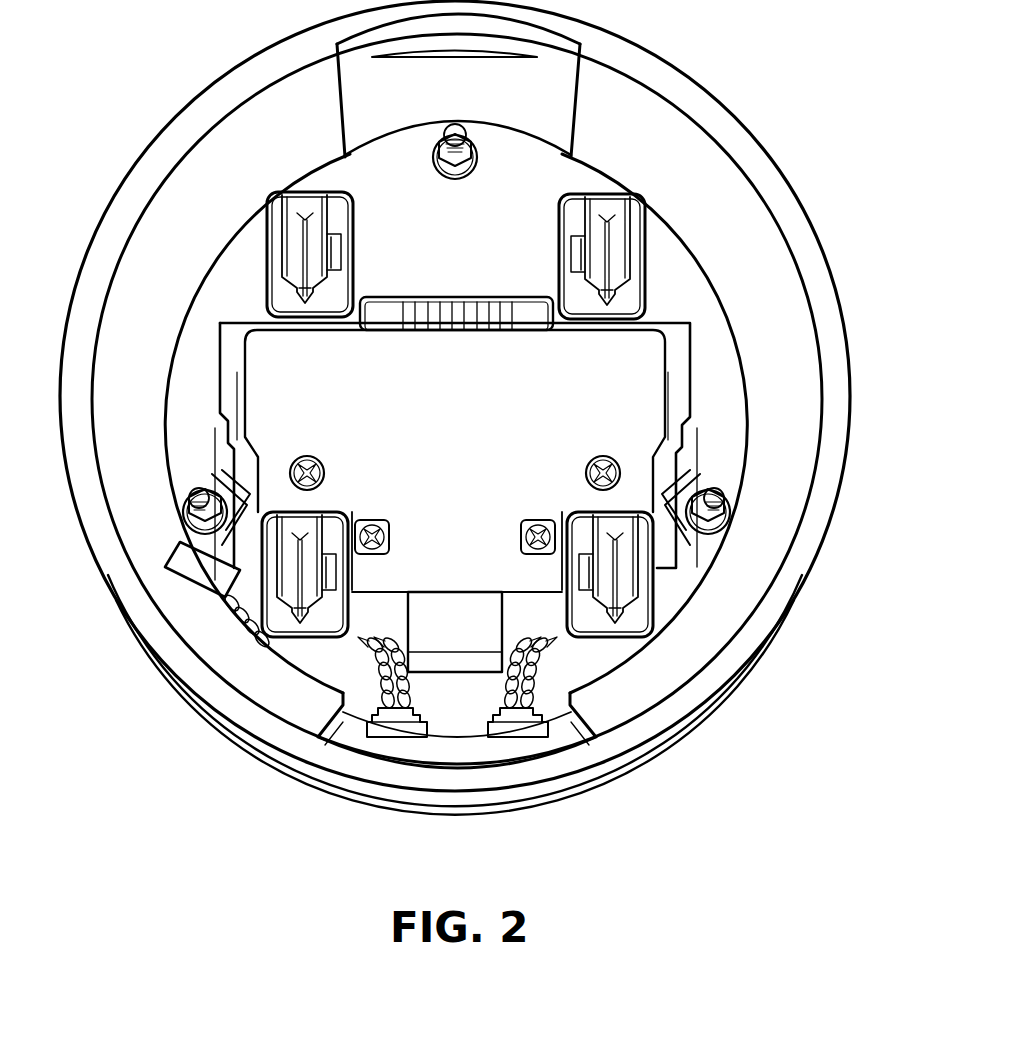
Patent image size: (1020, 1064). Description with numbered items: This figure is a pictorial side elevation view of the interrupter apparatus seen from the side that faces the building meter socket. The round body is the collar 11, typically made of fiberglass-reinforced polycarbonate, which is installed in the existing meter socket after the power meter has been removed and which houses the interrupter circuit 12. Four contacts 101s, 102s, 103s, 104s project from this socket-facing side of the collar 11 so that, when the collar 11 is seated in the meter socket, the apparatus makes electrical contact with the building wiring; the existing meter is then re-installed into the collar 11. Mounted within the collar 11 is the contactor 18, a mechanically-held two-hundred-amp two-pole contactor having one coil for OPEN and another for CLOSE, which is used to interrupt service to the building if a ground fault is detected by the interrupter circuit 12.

The collar 11 is at (793, 192).
The interrupter circuit 12 is at (467, 273).
The contactor 18 is at (618, 380).
The contact 101s is at (280, 233).
The contact 102s is at (627, 230).
The contact 103s is at (278, 577).
The contact 104s is at (627, 587).